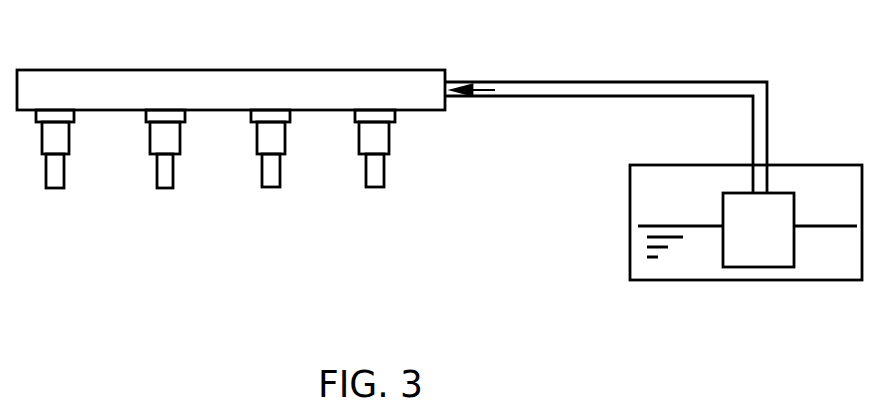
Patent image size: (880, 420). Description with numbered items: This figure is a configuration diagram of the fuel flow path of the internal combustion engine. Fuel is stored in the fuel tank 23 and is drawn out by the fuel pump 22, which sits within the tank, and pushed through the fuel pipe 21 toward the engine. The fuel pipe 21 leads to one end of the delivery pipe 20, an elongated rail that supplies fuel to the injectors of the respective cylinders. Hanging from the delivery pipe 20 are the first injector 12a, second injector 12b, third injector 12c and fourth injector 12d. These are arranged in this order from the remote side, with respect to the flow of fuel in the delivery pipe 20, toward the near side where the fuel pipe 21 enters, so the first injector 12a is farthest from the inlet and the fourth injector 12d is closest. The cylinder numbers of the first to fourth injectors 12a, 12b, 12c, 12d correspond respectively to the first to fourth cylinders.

The delivery pipe 20 is at (175, 70).
The first injector 12a is at (69, 150).
The second injector 12b is at (180, 150).
The third injector 12c is at (285, 150).
The fourth injector 12d is at (389, 150).
The fuel pipe 21 is at (552, 82).
The fuel pump 22 is at (763, 257).
The fuel tank 23 is at (630, 205).